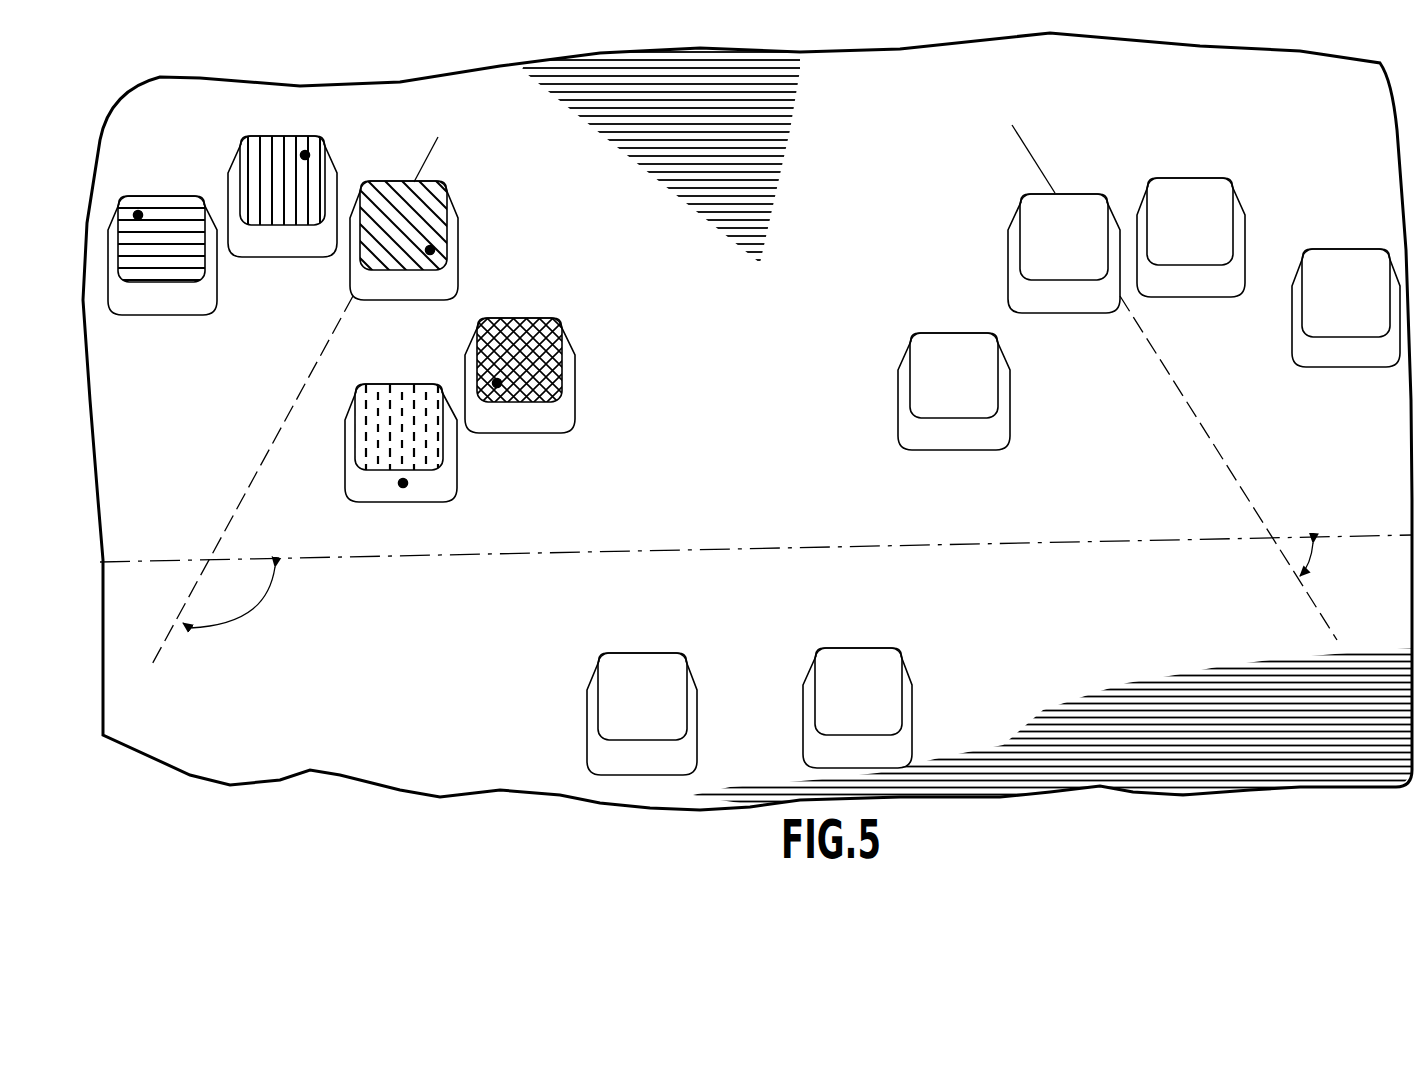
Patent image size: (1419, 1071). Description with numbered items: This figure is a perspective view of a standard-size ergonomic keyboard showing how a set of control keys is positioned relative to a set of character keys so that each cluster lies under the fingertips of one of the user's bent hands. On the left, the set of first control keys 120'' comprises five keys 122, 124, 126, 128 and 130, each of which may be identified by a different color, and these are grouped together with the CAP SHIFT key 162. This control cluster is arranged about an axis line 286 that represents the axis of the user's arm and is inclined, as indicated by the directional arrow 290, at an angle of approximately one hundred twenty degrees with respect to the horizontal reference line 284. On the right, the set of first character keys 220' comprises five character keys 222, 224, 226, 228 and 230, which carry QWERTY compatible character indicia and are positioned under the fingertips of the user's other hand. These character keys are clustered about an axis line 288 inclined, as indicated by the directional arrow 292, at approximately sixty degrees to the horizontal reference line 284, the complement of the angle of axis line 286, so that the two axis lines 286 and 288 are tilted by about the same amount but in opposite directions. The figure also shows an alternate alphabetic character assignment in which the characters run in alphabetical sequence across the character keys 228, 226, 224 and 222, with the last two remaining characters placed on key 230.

The set of first control keys 120'' is at (747, 421).
The control key 122 is at (150, 315).
The control key 124 is at (265, 257).
The control key 126 is at (458, 266).
The control key 128 is at (524, 433).
The control key 130 is at (447, 485).
The CAP SHIFT key 162 is at (697, 725).
The set of first character keys 220' is at (928, 148).
The character key 222 is at (1345, 248).
The character key 224 is at (1205, 297).
The character key 226 is at (1072, 193).
The character key 228 is at (1000, 412).
The character key 230 is at (912, 720).
The horizontal reference line 284 is at (705, 548).
The axis line 286 is at (212, 537).
The axis line 288 is at (1232, 475).
The directional arrow 290 is at (252, 612).
The directional arrow 292 is at (1307, 566).